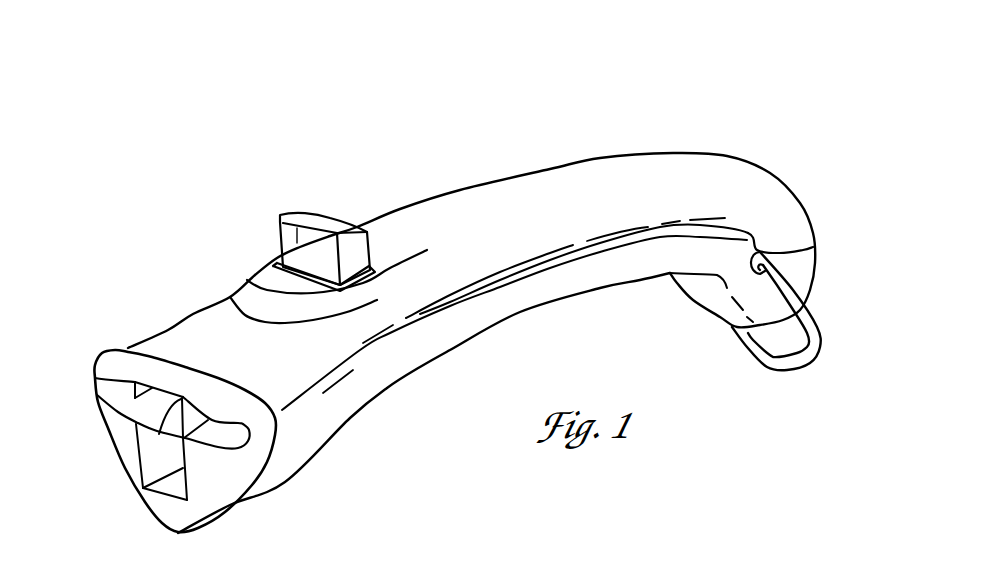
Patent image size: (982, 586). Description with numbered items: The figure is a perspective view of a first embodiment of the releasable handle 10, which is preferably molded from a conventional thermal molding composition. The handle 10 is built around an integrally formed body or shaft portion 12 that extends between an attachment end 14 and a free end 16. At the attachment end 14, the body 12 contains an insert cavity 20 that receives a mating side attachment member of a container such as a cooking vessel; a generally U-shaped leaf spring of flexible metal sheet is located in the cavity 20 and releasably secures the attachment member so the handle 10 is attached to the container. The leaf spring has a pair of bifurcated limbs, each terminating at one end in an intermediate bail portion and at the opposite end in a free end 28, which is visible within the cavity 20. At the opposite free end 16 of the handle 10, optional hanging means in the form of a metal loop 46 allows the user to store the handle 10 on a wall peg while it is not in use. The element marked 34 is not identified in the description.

The releasable handle 10 is at (504, 140).
The body or shaft portion 12 is at (193, 333).
The attachment end 14 is at (118, 368).
The free end 16 is at (818, 282).
The insert cavity 20 is at (145, 403).
The free end of limb 28 is at (175, 428).
The button 34 is at (298, 238).
The metal loop 46 is at (820, 328).